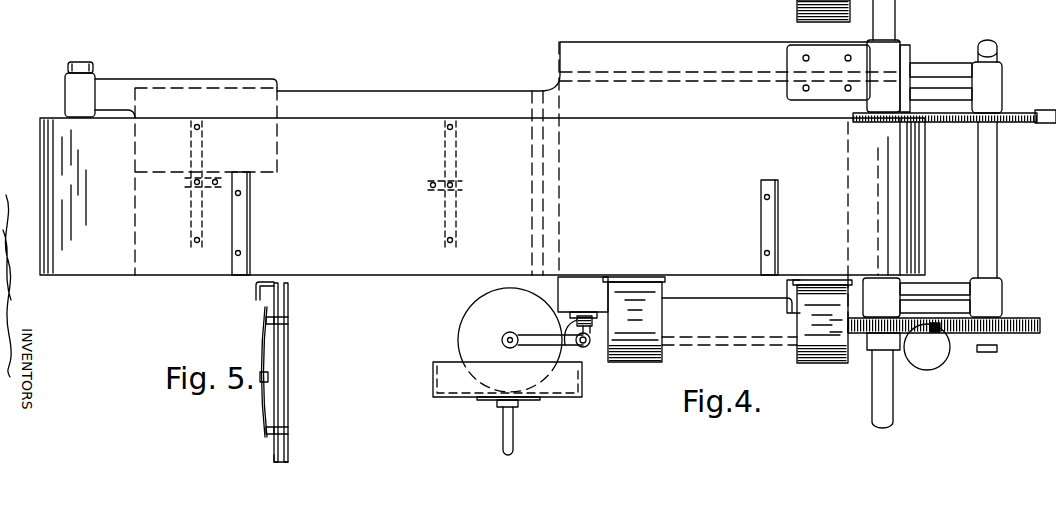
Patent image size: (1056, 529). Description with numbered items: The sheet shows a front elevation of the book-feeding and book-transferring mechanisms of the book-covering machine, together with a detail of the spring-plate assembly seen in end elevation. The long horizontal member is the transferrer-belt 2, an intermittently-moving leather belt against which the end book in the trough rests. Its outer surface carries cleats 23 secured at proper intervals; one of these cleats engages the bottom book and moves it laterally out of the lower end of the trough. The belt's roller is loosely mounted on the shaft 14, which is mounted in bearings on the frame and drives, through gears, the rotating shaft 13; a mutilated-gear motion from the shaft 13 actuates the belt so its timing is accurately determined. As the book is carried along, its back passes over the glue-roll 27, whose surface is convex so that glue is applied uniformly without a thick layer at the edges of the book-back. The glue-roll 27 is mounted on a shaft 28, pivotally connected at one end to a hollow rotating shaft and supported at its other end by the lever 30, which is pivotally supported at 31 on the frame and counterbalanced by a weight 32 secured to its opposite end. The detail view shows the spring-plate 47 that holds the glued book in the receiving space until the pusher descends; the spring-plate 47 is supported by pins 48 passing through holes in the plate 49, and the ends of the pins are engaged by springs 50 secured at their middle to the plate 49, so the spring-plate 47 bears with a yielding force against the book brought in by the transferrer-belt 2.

In FIG. 4, the transferrer-belt 2 is at (482, 196).
In FIG. 4, the rotating shaft 13 is at (990, 192).
In FIG. 4, the shaft 14 is at (880, 395).
In FIG. 4, the cleats 23 is at (240, 232).
In FIG. 4, the glue-roll 27 is at (510, 340).
In FIG. 4, the shaft 28 is at (505, 340).
In FIG. 4, the lever 30 is at (567, 343).
In FIG. 4, the pivot 31 is at (582, 347).
In FIG. 4, the weight 32 is at (933, 353).
In FIG. 5, the spring-plate 47 is at (288, 351).
In FIG. 5, the pins 48 is at (263, 438).
In FIG. 5, the plate 49 is at (275, 455).
In FIG. 5, the springs 50 is at (262, 338).